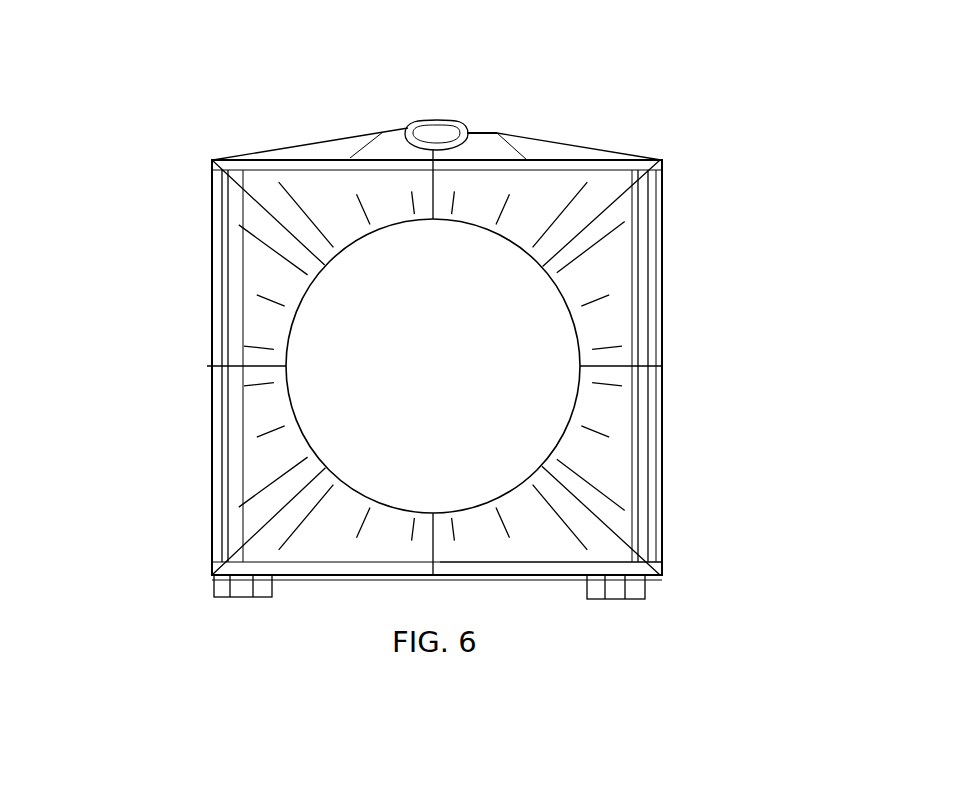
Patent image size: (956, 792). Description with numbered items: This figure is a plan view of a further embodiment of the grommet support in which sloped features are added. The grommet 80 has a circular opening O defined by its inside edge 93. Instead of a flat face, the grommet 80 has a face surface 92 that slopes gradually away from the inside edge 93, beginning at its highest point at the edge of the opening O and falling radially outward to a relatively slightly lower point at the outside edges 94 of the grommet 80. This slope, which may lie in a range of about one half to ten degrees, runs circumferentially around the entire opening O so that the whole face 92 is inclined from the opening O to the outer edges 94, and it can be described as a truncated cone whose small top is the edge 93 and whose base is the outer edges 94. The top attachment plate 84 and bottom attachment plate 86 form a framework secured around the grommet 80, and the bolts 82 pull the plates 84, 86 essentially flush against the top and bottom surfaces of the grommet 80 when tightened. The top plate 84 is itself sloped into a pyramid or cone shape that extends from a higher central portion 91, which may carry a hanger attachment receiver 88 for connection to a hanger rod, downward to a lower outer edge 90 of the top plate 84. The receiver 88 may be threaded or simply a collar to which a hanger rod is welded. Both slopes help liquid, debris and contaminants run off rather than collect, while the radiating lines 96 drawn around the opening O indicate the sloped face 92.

The grommet 80 is at (717, 333).
The bolts 82 is at (243, 587).
The top attachment plate 84 is at (538, 148).
The bottom attachment plate 86 is at (492, 570).
The hanger attachment receiver 88 is at (431, 127).
The lower outer edge 90 is at (238, 157).
The higher central portion 91 is at (477, 133).
The face surface 92 is at (273, 440).
The inside edge 93 is at (547, 580).
The outside edges 94 is at (663, 477).
The light rays 96 is at (283, 227).
The circular opening O is at (425, 349).